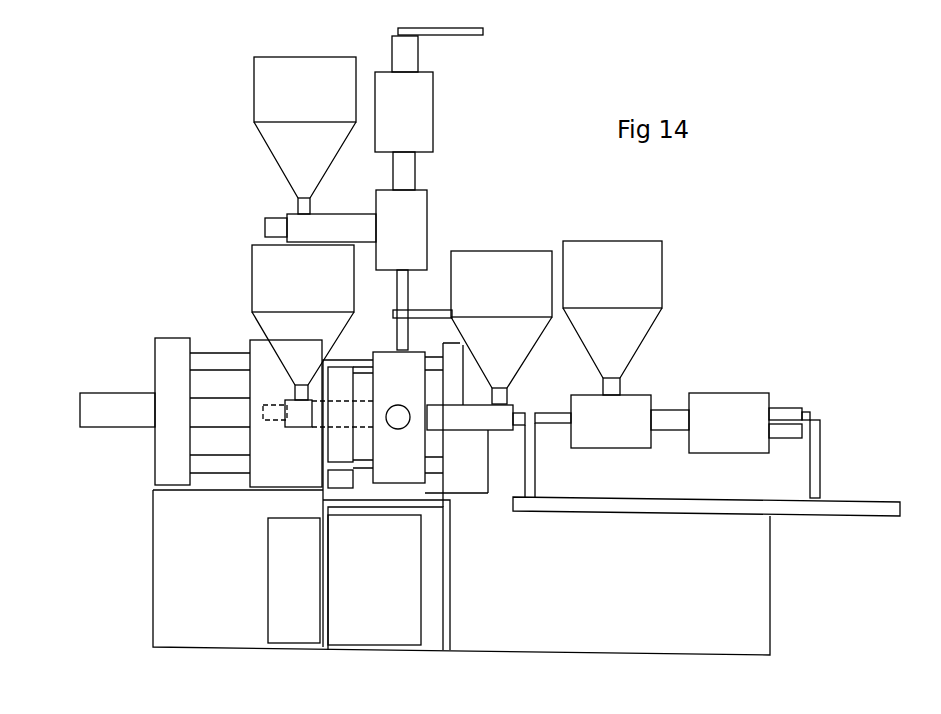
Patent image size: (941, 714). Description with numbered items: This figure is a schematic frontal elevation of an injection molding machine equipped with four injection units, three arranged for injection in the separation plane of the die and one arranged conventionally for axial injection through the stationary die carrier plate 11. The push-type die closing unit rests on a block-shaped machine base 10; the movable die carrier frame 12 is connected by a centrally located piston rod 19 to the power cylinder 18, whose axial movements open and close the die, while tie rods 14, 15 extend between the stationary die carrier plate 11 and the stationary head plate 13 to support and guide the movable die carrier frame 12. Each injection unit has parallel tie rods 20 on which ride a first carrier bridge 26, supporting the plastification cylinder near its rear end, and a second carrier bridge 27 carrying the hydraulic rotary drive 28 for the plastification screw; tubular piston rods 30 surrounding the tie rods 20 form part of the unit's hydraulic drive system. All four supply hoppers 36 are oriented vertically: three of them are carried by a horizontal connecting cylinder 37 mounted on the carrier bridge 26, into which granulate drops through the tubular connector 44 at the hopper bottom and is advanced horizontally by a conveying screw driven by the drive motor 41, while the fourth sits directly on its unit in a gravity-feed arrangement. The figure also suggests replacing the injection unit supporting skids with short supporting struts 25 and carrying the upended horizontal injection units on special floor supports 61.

The machine base 10 is at (748, 562).
The stationary die carrier plate 11 is at (477, 470).
The movable die carrier frame 12 is at (297, 477).
The head plate 13 is at (165, 375).
The tie rod 14 is at (228, 360).
The tie rod 15 is at (208, 467).
The power cylinder 18 is at (108, 420).
The piston rod 19 is at (228, 405).
The tie rod 20 is at (400, 302).
The supporting strut 25 is at (470, 36).
The first carrier bridge 26 is at (410, 243).
The second carrier bridge 27 is at (422, 103).
The hydraulic rotary drive 28 is at (405, 52).
The tubular piston rod 30 is at (410, 173).
The supply hopper 36 is at (270, 83).
The connecting cylinder 37 is at (365, 226).
The drive motor 41 is at (265, 230).
The tubular connector 44 is at (295, 207).
The floor support 61 is at (443, 632).